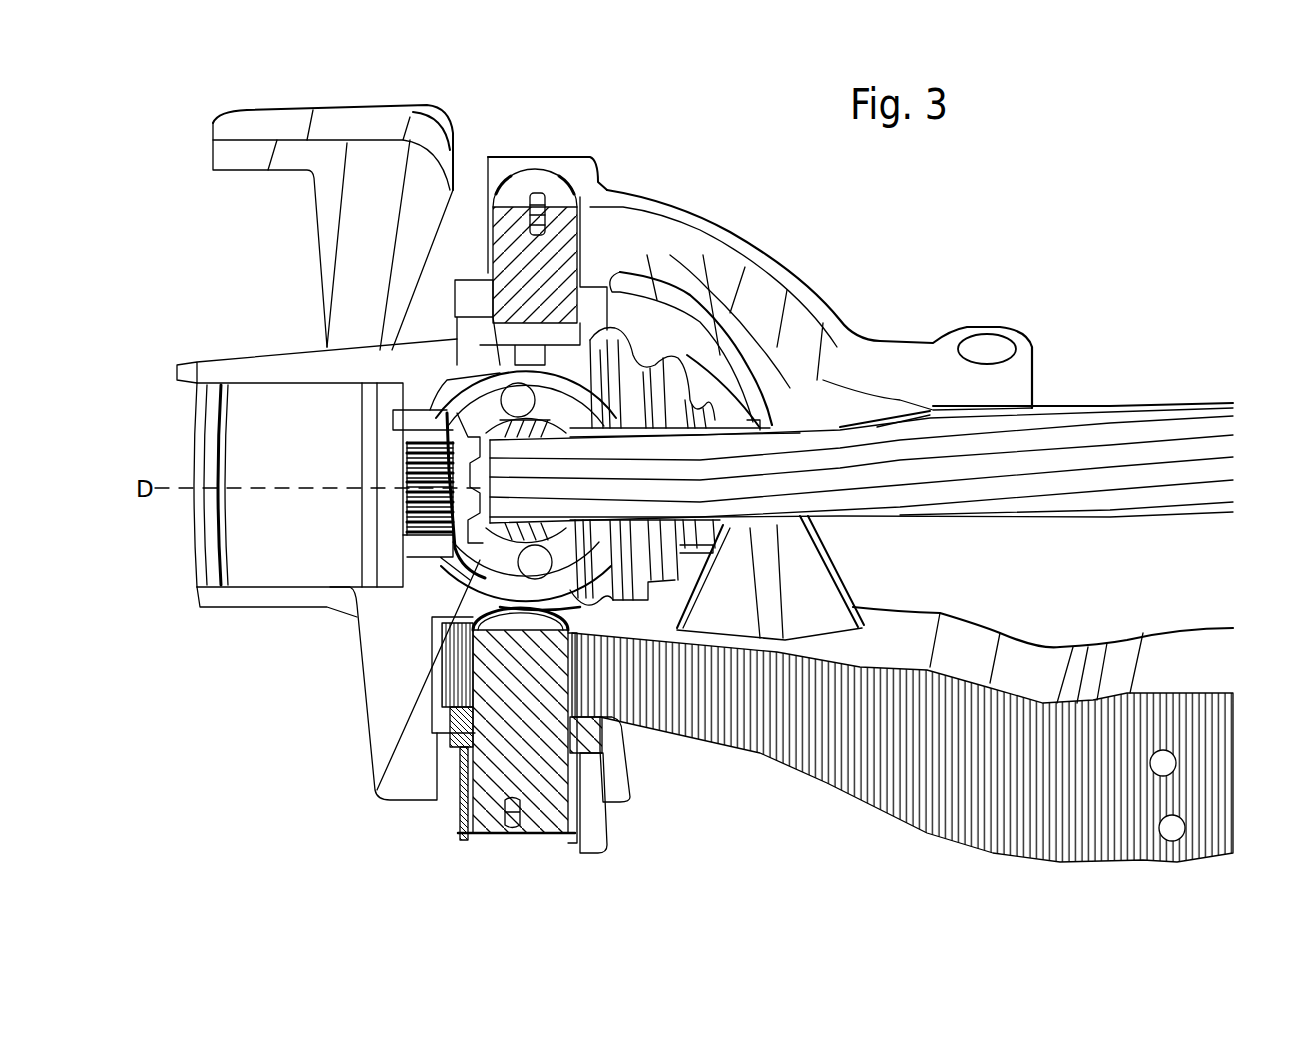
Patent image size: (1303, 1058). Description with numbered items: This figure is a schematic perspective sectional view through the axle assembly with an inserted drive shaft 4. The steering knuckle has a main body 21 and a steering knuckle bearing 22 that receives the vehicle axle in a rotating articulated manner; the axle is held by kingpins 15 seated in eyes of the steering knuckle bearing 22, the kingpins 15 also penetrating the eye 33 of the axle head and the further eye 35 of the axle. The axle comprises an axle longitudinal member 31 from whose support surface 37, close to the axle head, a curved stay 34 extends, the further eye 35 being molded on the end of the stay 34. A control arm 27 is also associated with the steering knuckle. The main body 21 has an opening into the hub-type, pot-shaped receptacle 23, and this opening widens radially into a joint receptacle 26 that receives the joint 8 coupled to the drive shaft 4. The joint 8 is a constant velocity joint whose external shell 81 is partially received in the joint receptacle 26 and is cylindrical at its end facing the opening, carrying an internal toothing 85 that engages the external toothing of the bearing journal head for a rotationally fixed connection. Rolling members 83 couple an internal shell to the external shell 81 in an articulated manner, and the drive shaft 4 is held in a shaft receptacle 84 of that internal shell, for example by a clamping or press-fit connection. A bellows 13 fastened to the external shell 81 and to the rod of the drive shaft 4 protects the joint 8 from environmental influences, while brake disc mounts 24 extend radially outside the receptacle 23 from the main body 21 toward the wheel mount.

The drive shaft 4 is at (1120, 435).
The joint 8 is at (474, 383).
The bellows 13 is at (652, 352).
The kingpin 15 is at (563, 265).
The main body 21 is at (380, 748).
The steering knuckle bearing 22 is at (487, 295).
The receptacle 23 is at (257, 603).
The brake disc mount 24 is at (237, 158).
The joint receptacle 26 is at (437, 392).
The control arm 27 is at (767, 310).
The axle longitudinal member 31 is at (1173, 653).
The eye 33 is at (592, 620).
The stay 34 is at (810, 582).
The eye 35 is at (470, 300).
The support surface 37 is at (880, 640).
The external shell 81 is at (490, 562).
The rolling member 83 is at (530, 563).
The shaft receptacle 84 is at (470, 553).
The toothing 85 is at (430, 511).